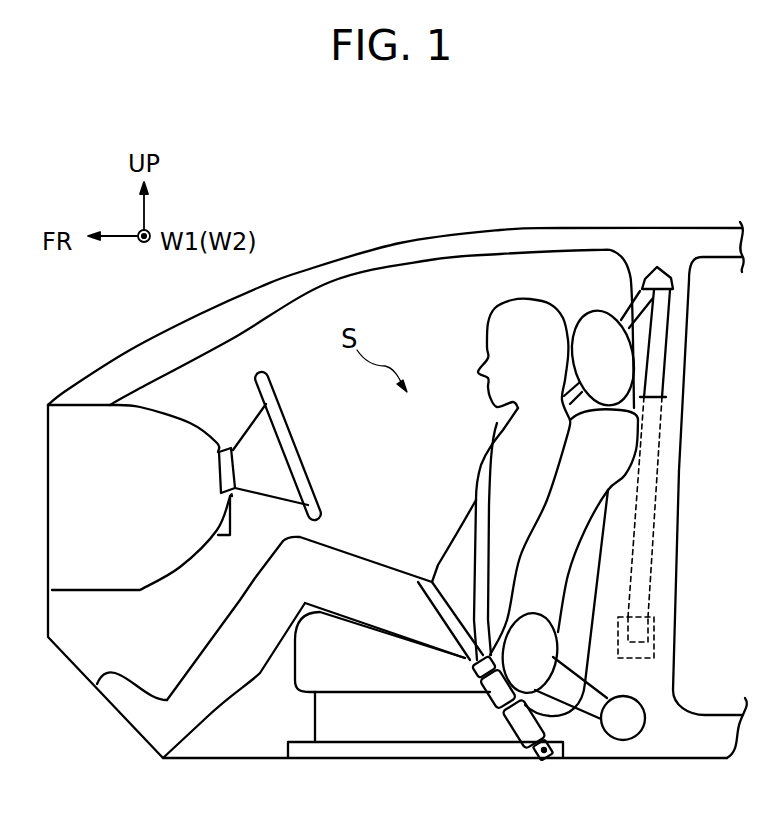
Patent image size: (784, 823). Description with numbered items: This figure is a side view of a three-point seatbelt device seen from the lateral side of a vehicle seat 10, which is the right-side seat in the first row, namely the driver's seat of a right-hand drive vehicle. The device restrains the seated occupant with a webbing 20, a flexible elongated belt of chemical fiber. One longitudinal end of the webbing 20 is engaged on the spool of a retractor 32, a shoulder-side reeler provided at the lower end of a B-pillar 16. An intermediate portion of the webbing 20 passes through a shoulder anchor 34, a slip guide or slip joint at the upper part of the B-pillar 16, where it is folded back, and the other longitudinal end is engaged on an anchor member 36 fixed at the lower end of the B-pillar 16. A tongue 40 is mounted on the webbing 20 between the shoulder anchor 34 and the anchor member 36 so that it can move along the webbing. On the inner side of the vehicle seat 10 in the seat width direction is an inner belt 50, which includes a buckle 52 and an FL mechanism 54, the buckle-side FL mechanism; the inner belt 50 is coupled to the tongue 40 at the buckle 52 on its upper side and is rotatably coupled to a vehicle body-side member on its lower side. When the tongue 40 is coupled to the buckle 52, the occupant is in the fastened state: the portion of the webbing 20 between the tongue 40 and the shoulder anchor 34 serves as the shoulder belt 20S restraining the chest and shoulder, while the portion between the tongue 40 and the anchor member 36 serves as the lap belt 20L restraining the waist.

The vehicle seat 10 is at (292, 700).
The B-pillar 16 is at (684, 456).
The webbing 20 is at (669, 341).
The shoulder belt 20S is at (481, 478).
The lap belt 20L is at (428, 578).
The retractor 32 is at (655, 646).
The shoulder anchor 34 is at (658, 266).
The anchor member 36 is at (637, 723).
The tongue 40 is at (470, 668).
The inner belt 50 is at (492, 728).
The buckle 52 is at (484, 700).
The FL mechanism 54 is at (532, 744).